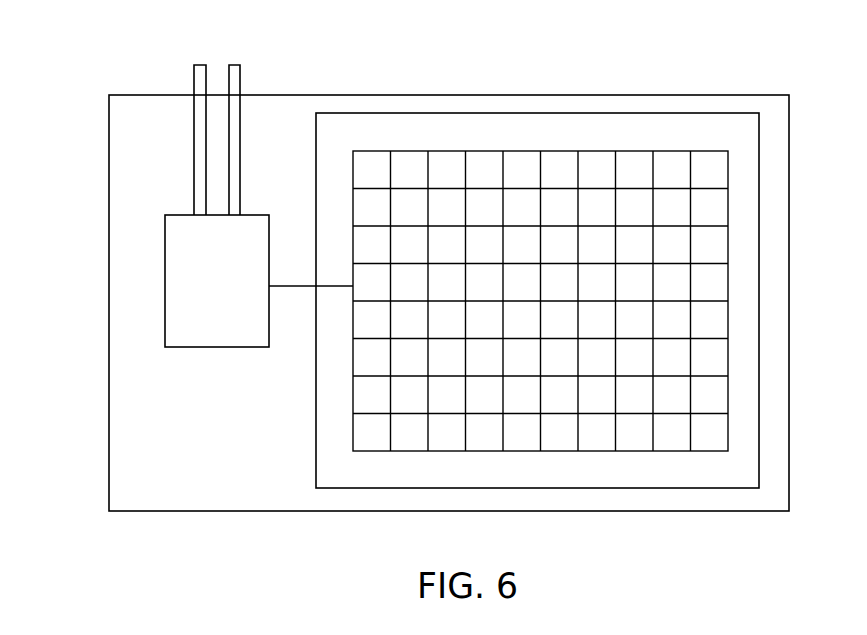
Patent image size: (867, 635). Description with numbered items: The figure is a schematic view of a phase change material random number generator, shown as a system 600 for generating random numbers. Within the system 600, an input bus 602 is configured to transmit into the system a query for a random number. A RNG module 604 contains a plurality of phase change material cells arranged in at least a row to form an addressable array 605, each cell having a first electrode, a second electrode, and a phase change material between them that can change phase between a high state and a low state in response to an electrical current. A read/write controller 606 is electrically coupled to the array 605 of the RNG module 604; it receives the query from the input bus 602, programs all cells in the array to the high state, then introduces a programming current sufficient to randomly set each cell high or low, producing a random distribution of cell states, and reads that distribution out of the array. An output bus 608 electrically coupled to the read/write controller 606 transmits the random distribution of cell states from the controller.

The system for generating random numbers 600 is at (277, 511).
The input bus 602 is at (193, 117).
The RNG module 604 is at (653, 113).
The addressable array 605 is at (447, 150).
The read/write controller 606 is at (165, 260).
The output bus 608 is at (240, 122).